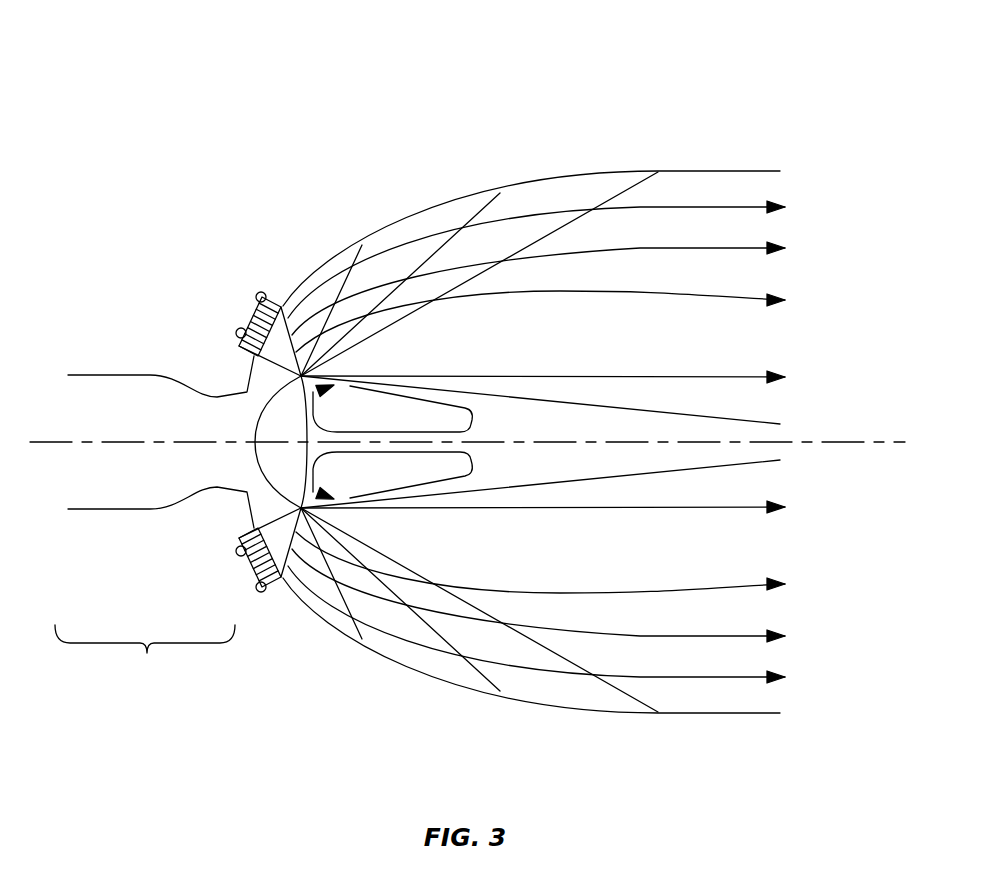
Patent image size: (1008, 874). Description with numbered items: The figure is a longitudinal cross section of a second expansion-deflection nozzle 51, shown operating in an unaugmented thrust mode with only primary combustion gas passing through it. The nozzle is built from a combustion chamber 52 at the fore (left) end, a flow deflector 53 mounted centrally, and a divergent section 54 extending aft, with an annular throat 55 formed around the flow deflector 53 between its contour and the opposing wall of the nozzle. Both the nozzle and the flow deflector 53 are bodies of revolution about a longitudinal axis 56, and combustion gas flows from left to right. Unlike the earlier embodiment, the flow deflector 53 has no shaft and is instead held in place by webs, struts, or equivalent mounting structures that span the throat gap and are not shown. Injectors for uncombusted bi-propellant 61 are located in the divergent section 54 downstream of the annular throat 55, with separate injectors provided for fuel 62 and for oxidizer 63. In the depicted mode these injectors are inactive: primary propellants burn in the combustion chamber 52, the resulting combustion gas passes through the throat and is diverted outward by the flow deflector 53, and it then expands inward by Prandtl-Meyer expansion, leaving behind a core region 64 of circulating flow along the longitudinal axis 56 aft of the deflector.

The expansion-deflection nozzle 51 is at (235, 60).
The combustion chamber 52 is at (145, 658).
The flow deflector 53 is at (290, 420).
The divergent section 54 is at (613, 172).
The annular throat 55 is at (222, 365).
The longitudinal axis 56 is at (820, 442).
The injectors for uncombusted bi-propellant 61 is at (249, 318).
The fuel injector 62 is at (236, 331).
The oxidizer injector 63 is at (259, 292).
The core region 64 is at (385, 470).